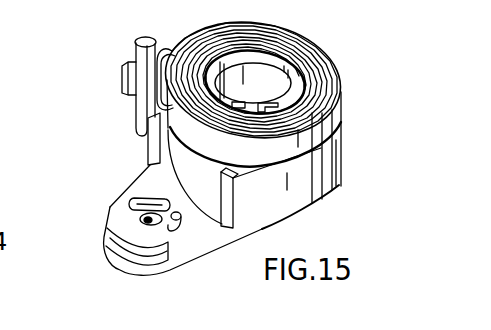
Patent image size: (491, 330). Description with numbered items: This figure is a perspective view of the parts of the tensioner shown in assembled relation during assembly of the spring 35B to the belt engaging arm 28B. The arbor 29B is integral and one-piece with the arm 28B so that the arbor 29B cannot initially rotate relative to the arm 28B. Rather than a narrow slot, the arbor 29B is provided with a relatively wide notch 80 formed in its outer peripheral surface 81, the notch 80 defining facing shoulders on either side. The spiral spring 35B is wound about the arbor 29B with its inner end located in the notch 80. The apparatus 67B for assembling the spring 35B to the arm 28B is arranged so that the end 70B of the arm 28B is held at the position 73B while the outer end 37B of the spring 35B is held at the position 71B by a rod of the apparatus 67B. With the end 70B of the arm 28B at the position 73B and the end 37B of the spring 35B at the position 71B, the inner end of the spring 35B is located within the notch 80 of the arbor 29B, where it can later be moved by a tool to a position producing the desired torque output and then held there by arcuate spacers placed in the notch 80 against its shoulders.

The belt engaging arm 28B is at (333, 162).
The spring 35B is at (281, 27).
The arbor 29B is at (290, 66).
The notch 80 is at (241, 103).
The outer peripheral surface 81 is at (292, 95).
The apparatus 67B is at (119, 50).
The end of the spring 37B is at (121, 68).
The position 71B is at (113, 103).
The end of the arm 70B is at (118, 264).
The position 73B is at (90, 265).